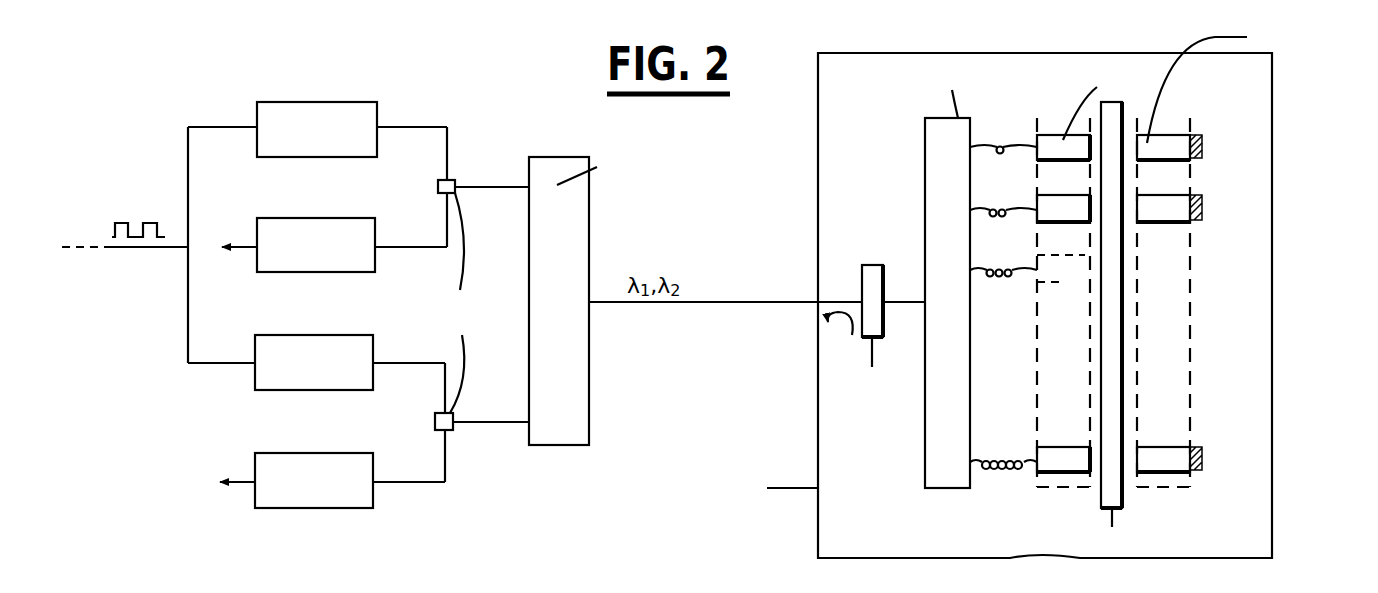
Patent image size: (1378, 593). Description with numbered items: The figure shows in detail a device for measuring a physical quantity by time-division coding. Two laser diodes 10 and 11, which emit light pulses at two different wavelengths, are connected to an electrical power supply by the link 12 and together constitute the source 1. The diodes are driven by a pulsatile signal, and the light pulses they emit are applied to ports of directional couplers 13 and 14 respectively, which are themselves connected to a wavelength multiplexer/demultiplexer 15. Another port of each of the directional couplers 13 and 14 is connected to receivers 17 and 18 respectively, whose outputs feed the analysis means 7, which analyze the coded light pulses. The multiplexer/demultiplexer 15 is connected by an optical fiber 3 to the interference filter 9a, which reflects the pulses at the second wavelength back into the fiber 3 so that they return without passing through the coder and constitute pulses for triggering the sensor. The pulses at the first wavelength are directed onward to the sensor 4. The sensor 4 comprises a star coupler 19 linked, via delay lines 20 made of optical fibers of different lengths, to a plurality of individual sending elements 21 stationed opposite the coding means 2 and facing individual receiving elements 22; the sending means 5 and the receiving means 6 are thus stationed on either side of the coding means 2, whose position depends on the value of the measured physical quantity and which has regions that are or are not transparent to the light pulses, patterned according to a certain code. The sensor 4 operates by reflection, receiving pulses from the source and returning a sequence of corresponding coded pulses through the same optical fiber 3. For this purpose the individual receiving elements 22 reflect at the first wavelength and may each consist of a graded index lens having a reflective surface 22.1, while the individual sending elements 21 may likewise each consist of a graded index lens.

The source 1 is at (430, 285).
The analysis means 7 is at (162, 412).
The coding means 2 is at (1104, 496).
The optical fiber 3 is at (750, 300).
The sensor 4 is at (812, 413).
The sending means 5 is at (1067, 296).
The receiving means 6 is at (1250, 283).
The interference filter 9a is at (872, 270).
The laser diode 10 is at (291, 112).
The laser diode 11 is at (297, 345).
The link 12 is at (150, 250).
The directional coupler 13 is at (455, 181).
The directional coupler 14 is at (453, 418).
The wavelength multiplexer/demultiplexer 15 is at (582, 425).
The receiver 17 is at (293, 228).
The receiver 18 is at (290, 468).
The star coupler 19 is at (932, 432).
The delay lines 20 is at (1005, 143).
The individual sending elements 21 is at (1056, 140).
The individual receiving elements 22 is at (1204, 116).
The reflective surface 22.1 is at (1198, 138).